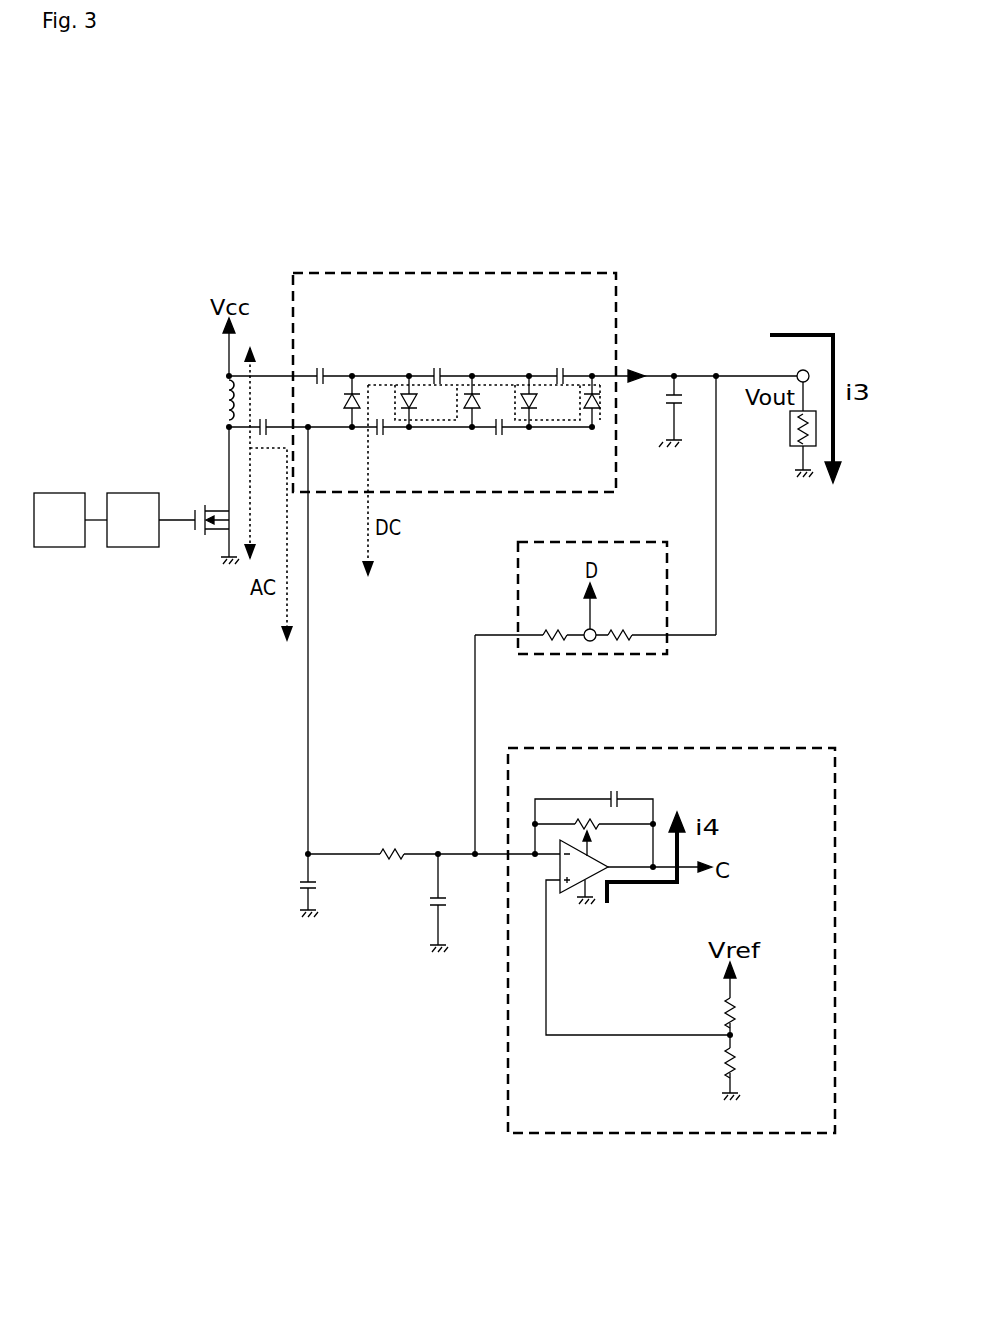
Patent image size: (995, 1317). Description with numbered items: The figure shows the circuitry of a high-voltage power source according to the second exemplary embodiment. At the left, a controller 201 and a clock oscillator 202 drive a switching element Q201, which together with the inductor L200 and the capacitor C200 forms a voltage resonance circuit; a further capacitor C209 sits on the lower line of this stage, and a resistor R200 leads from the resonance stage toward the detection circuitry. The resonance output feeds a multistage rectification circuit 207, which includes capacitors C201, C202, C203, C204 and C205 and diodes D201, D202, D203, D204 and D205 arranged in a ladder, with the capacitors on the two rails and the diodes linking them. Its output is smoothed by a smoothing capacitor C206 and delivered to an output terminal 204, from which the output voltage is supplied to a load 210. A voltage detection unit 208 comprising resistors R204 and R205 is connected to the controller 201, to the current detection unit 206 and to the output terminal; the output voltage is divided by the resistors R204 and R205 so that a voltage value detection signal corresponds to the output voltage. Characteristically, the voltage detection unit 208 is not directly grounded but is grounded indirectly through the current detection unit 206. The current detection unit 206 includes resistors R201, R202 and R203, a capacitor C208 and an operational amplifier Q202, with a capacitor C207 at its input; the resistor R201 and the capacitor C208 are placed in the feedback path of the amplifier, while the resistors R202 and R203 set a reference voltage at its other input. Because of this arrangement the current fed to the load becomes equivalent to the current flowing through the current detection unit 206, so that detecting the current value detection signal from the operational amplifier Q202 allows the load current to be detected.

The controller 201 is at (58, 493).
The clock oscillator 202 is at (132, 493).
The output terminal 204 is at (804, 363).
The current detection unit 206 is at (776, 748).
The multistage rectification circuit 207 is at (500, 273).
The voltage detection unit 208 is at (645, 542).
The load 210 is at (790, 430).
The inductor L200 is at (228, 398).
The capacitor C200 is at (299, 886).
The capacitor C201 is at (320, 366).
The capacitor C202 is at (381, 437).
The capacitor C203 is at (437, 366).
The capacitor C204 is at (500, 437).
The capacitor C205 is at (560, 366).
The smoothing capacitor C206 is at (671, 390).
The capacitor C207 is at (429, 901).
The capacitor C208 is at (620, 794).
The coupling capacitor C209 is at (262, 437).
The diode D201 is at (352, 412).
The diode D202 is at (404, 395).
The diode D203 is at (468, 410).
The diode D204 is at (524, 395).
The diode D205 is at (588, 410).
The switching element Q201 is at (212, 538).
The operational amplifier Q202 is at (575, 898).
The resistor R200 is at (392, 849).
The resistor R201 is at (584, 818).
The resistor R202 is at (740, 1012).
The resistor R203 is at (740, 1062).
The resistor R204 is at (550, 628).
The resistor R205 is at (614, 628).